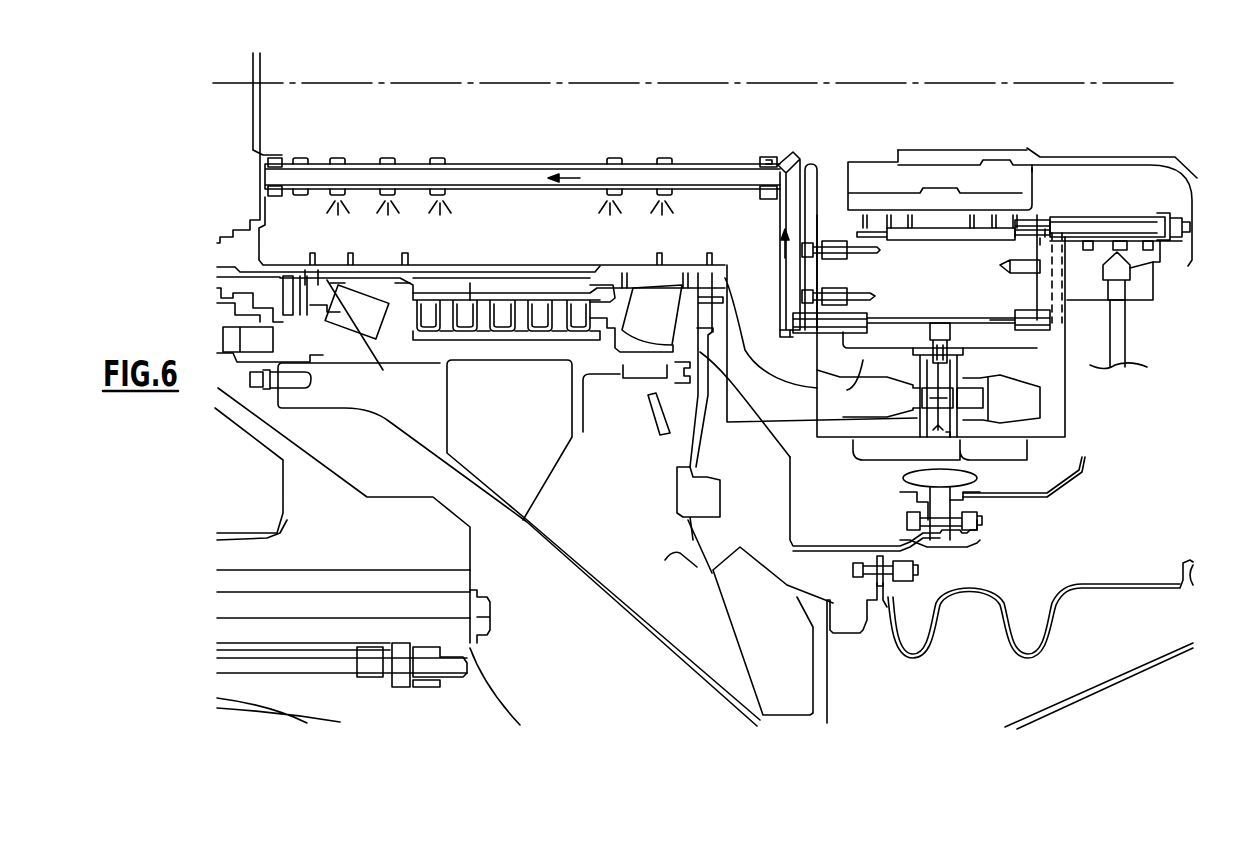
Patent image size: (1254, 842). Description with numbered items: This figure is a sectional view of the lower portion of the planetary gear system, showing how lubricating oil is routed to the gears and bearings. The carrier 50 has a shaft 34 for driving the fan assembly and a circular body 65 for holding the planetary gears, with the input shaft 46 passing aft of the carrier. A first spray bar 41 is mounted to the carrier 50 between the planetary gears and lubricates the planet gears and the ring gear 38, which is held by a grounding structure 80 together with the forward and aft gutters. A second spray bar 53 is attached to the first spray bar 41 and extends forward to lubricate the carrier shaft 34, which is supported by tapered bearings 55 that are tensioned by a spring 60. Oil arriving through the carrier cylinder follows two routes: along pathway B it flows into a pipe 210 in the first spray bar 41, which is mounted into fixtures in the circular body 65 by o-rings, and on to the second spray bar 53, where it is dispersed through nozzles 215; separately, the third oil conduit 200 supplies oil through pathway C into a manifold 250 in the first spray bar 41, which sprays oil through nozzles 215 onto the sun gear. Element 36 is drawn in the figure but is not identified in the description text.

The carrier shaft 34 is at (463, 272).
The heat shield 36 is at (872, 182).
The ring gear 38 is at (1013, 467).
The first spray bar 41 is at (1018, 258).
The input shaft 46 is at (1053, 162).
The carrier 50 is at (840, 433).
The second spray bar 53 is at (500, 160).
The tapered bearings 55 is at (360, 318).
The spring 60 is at (522, 332).
The circular body 65 is at (1037, 333).
The grounding structure 80 is at (917, 663).
The third oil conduit 200 is at (1140, 218).
The pipe 210 is at (953, 313).
The nozzles 215 is at (328, 202).
The manifold 250 is at (910, 234).
The pathway B is at (577, 176).
The pathway C is at (1060, 300).